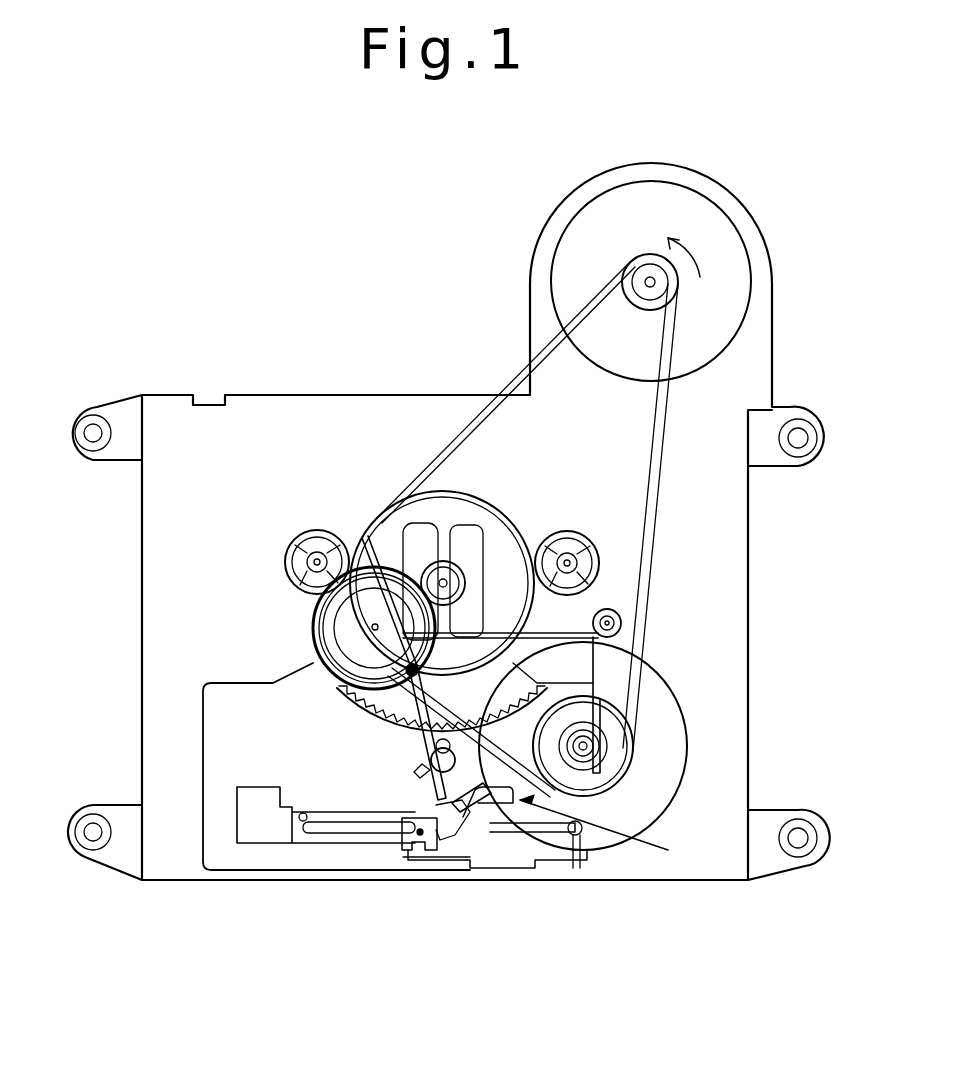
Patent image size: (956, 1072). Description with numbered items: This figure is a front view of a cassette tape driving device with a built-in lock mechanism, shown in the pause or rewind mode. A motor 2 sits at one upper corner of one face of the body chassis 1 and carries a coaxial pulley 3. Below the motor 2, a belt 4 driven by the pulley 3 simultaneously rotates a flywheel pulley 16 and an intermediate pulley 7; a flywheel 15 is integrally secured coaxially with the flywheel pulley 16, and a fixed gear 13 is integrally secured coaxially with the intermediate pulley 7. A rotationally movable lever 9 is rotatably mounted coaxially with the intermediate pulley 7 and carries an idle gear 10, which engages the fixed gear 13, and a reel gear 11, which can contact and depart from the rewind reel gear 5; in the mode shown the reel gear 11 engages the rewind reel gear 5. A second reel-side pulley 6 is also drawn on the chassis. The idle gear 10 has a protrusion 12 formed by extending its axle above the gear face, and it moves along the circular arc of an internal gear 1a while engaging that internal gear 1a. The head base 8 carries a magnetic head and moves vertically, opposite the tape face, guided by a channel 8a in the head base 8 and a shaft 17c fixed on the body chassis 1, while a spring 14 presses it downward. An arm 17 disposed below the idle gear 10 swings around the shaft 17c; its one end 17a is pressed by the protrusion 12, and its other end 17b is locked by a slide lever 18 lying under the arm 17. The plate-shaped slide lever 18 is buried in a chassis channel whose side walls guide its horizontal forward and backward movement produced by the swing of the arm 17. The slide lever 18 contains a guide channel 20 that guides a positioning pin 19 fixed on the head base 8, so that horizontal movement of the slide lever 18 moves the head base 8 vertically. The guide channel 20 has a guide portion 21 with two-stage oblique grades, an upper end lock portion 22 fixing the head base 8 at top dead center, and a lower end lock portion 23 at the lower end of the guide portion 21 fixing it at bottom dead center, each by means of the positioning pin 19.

The body chassis 1 is at (710, 522).
The internal gear 1a is at (337, 690).
The motor 2 is at (718, 291).
The pulley 3 is at (630, 268).
The belt 4 is at (660, 467).
The rewind reel gear 5 is at (302, 530).
The pulley 6 is at (576, 531).
The intermediate pulley 7 is at (512, 523).
The head base 8 is at (200, 678).
The channel 8a is at (403, 857).
The rotationally movable lever 9 is at (347, 633).
The idle gear 10 is at (313, 610).
The reel gear 11 is at (317, 628).
The protrusion 12 is at (368, 540).
The fixed gear 13 is at (448, 560).
The spring 14 is at (615, 612).
The flywheel 15 is at (650, 687).
The flywheel pulley 16 is at (627, 773).
The arm 17 is at (430, 742).
The one end of arm 17a is at (462, 570).
The other end of arm 17b is at (468, 838).
The shaft 17c is at (430, 760).
The slide lever 18 is at (323, 815).
The positioning pin 19 is at (443, 850).
The guide channel 20 is at (608, 829).
The guide portion 21 is at (480, 843).
The upper end lock portion 22 is at (513, 803).
The lower end lock portion 23 is at (432, 823).